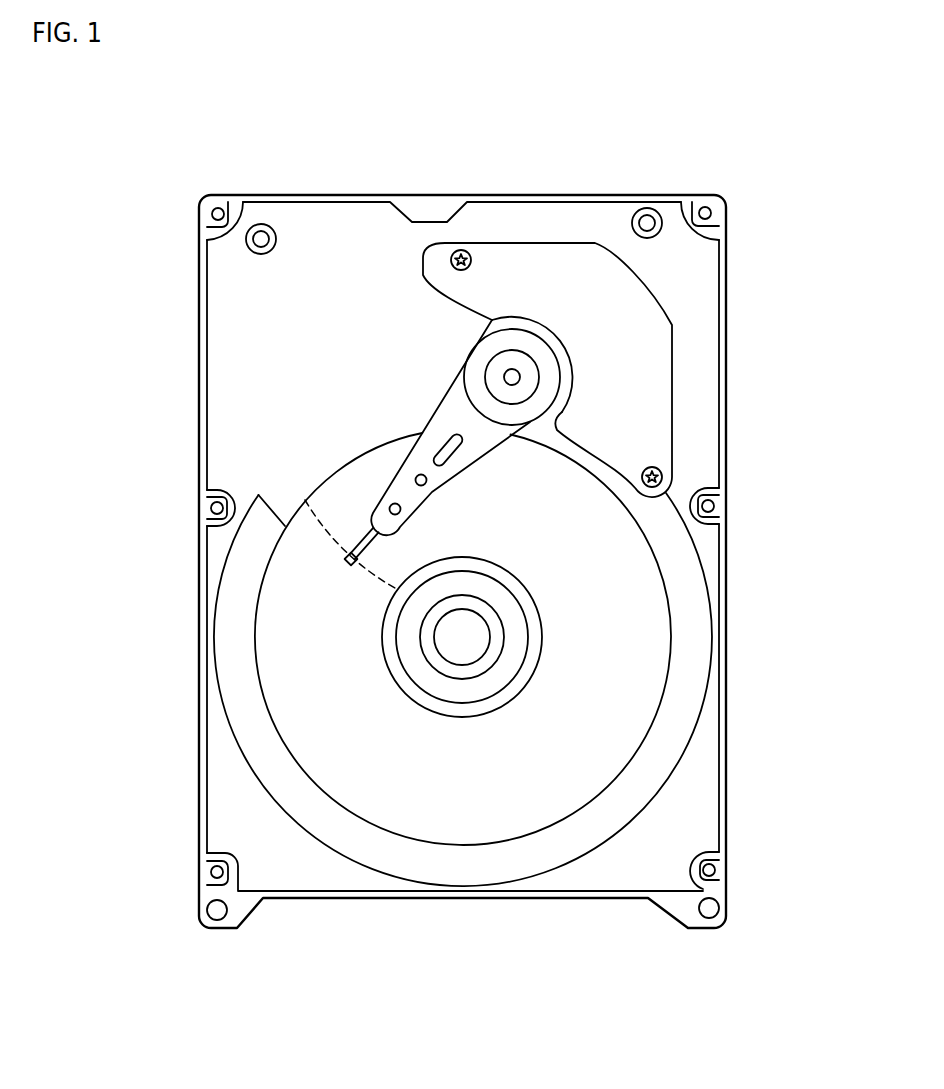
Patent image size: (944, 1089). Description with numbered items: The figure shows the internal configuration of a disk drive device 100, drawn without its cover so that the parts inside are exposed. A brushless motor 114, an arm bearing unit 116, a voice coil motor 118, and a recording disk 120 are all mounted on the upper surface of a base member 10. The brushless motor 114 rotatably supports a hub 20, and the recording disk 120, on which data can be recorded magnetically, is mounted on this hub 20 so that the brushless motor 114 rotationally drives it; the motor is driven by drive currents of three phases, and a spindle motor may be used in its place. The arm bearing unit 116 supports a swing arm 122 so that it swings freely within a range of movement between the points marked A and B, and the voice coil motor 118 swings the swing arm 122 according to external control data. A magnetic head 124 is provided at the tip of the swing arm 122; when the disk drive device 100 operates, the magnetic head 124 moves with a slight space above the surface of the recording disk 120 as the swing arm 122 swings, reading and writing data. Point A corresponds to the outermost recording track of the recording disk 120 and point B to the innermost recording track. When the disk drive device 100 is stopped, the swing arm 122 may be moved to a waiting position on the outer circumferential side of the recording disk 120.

The disk drive device 100 is at (580, 153).
The base member 10 is at (725, 290).
The hub 20 is at (503, 668).
The brushless motor 114 is at (535, 605).
The arm bearing unit 116 is at (565, 383).
The voice coil motor 118 is at (641, 276).
The recording disk 120 is at (643, 669).
The swing arm 122 is at (440, 410).
The magnetic head 124 is at (349, 561).